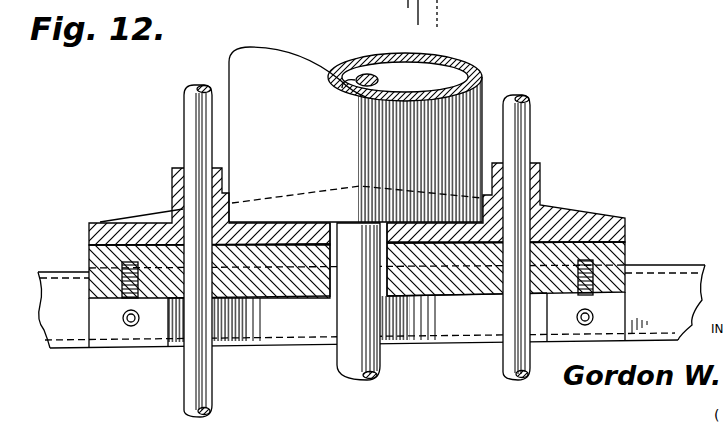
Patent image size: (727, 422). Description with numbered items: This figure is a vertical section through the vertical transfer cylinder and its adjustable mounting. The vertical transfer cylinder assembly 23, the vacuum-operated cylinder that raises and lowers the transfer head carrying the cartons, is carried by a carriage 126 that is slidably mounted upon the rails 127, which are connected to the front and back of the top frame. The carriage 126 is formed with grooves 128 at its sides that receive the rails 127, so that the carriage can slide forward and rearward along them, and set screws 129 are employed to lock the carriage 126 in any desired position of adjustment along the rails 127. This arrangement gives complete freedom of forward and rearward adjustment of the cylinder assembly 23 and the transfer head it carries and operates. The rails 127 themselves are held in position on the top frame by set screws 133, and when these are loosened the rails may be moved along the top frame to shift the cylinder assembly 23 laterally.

The vertical transfer cylinder assembly 23 is at (470, 97).
The carriage 126 is at (603, 223).
The rails 127 is at (90, 258).
The grooves 128 is at (120, 246).
The set screws 129 is at (122, 300).
The set screws 133 is at (130, 327).